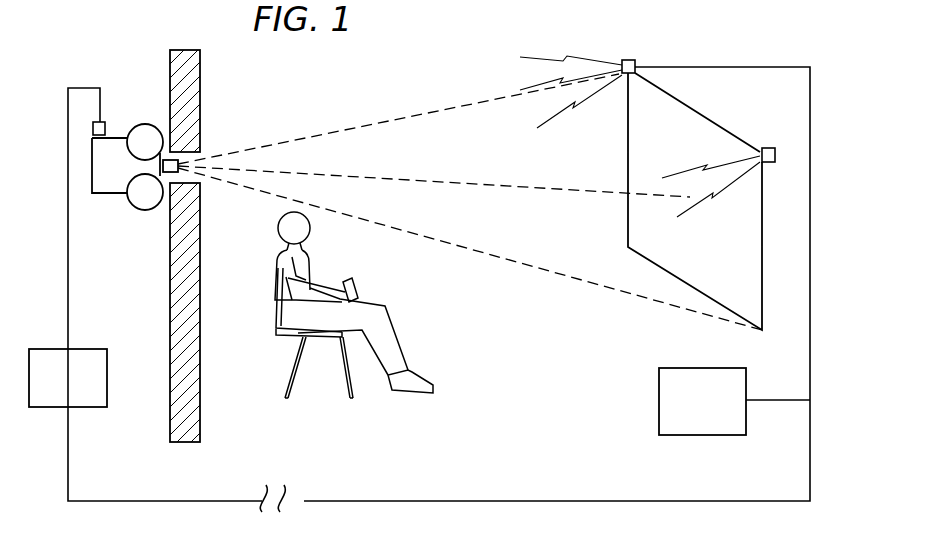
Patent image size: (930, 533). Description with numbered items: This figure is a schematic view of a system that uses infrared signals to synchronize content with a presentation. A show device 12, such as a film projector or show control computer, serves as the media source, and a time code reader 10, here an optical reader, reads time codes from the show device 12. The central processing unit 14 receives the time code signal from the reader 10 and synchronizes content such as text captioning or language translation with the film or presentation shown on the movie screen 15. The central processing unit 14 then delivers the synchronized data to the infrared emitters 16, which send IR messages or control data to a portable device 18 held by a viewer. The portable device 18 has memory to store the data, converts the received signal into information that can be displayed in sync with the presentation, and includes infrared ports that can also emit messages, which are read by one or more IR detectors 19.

The time code reader 10 is at (105, 128).
The show device 12 is at (105, 193).
The central processing unit 14 is at (107, 382).
The movie screen 15 is at (731, 272).
The infrared emitters 16 is at (628, 60).
The portable device 18 is at (356, 285).
The IR detectors 19 is at (659, 397).